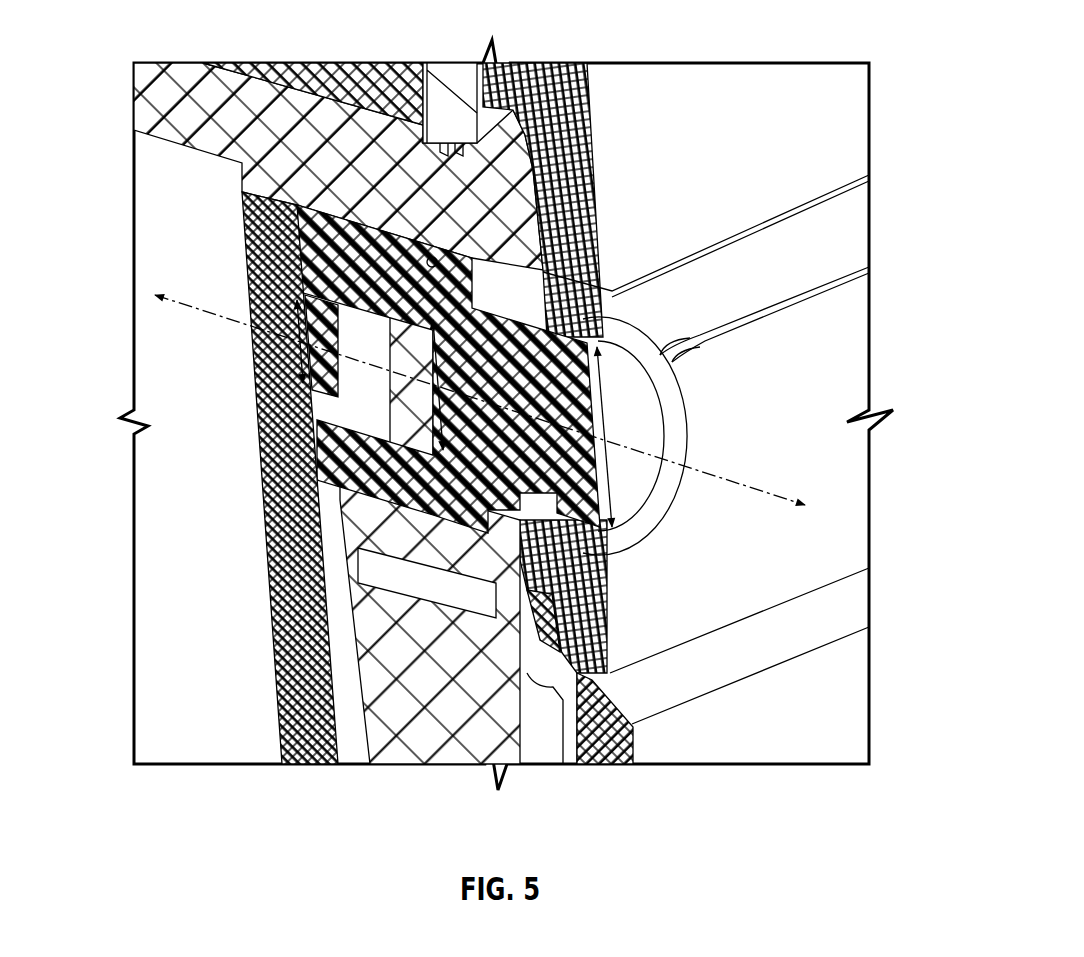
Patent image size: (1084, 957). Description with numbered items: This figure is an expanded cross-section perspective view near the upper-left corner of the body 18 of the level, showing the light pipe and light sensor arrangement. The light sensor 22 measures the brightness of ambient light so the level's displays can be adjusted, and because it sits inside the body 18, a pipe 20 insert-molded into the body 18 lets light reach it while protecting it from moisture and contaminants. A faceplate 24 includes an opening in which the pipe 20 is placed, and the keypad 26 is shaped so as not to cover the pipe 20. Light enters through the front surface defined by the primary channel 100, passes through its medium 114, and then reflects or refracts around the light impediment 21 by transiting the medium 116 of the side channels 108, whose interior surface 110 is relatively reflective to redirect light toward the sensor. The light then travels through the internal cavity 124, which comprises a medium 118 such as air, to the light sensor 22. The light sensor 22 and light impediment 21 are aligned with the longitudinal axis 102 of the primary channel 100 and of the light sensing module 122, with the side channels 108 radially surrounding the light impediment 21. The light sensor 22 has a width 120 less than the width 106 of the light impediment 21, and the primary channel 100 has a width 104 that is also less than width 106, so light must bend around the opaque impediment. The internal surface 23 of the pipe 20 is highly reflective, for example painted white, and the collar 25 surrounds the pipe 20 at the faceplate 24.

The body 18 is at (230, 112).
The pipe 20 is at (360, 455).
The light impediment 21 is at (377, 323).
The light sensor 22 is at (307, 388).
The internal surface 23 is at (355, 228).
The faceplate 24 is at (822, 245).
The boss 25 is at (678, 408).
The keypad 26 is at (812, 730).
The primary channel 100 is at (372, 417).
The longitudinal axis 102 is at (780, 490).
The width 104 is at (686, 342).
The width 106 is at (420, 445).
The side channels 108 is at (385, 235).
The interior surface 110 is at (433, 257).
The medium 114 is at (582, 510).
The medium 116 is at (370, 495).
The medium 118 is at (345, 458).
The width 120 is at (322, 357).
The light sensing module 122 is at (225, 218).
The internal cavity 124 is at (340, 413).